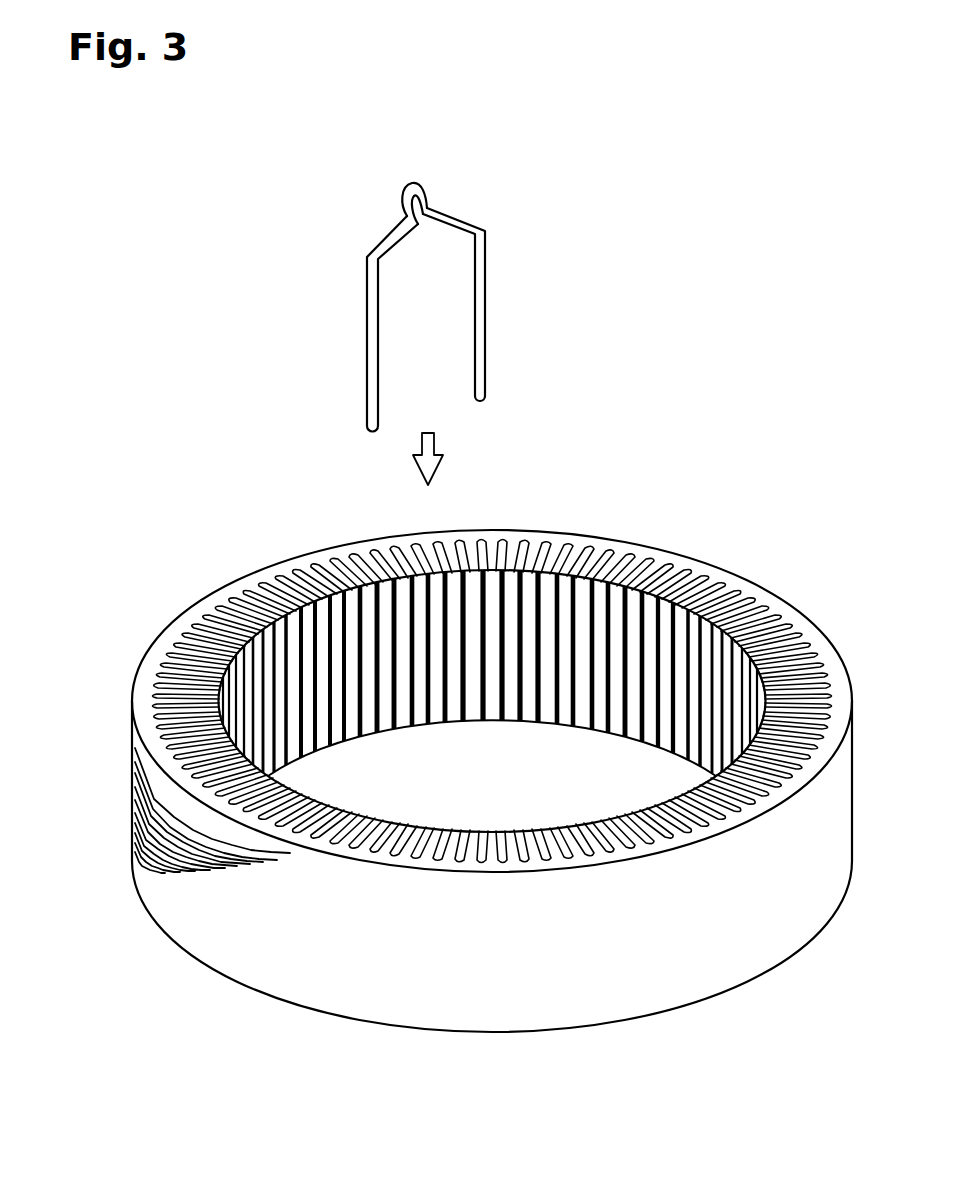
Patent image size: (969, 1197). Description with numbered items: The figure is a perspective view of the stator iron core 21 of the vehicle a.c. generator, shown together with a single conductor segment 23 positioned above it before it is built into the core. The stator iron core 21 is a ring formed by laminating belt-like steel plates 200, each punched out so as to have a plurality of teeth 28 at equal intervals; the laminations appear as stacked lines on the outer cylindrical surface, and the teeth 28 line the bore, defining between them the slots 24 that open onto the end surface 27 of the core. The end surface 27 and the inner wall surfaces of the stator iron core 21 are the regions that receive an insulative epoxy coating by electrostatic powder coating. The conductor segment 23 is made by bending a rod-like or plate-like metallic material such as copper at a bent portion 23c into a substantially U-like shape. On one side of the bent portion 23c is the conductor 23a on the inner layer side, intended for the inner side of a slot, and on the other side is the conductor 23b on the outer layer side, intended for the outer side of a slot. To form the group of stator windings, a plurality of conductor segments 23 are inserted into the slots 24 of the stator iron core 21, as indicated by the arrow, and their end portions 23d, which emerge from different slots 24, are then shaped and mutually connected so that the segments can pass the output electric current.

The stator iron core 21 is at (521, 997).
The conductor segment 23 is at (415, 294).
The conductor on an inner layer side 23a is at (369, 331).
The conductor on an outer layer side 23b is at (484, 316).
The bent portion 23c is at (414, 184).
The end portions 23d is at (369, 419).
The slots 24 is at (700, 578).
The end surface 27 is at (777, 601).
The teeth 28 is at (797, 626).
The belt-like steel plates 200 is at (134, 808).